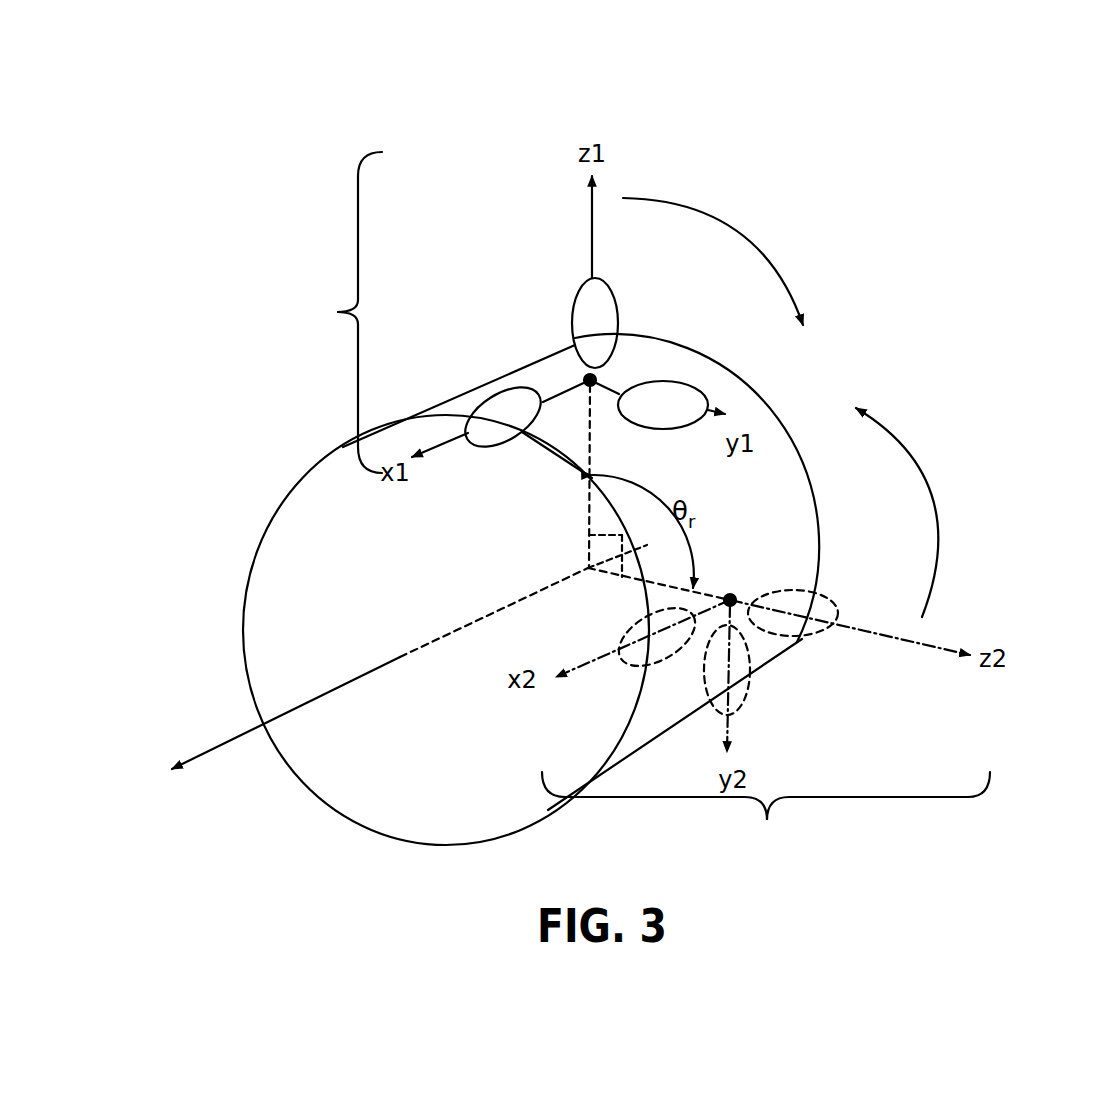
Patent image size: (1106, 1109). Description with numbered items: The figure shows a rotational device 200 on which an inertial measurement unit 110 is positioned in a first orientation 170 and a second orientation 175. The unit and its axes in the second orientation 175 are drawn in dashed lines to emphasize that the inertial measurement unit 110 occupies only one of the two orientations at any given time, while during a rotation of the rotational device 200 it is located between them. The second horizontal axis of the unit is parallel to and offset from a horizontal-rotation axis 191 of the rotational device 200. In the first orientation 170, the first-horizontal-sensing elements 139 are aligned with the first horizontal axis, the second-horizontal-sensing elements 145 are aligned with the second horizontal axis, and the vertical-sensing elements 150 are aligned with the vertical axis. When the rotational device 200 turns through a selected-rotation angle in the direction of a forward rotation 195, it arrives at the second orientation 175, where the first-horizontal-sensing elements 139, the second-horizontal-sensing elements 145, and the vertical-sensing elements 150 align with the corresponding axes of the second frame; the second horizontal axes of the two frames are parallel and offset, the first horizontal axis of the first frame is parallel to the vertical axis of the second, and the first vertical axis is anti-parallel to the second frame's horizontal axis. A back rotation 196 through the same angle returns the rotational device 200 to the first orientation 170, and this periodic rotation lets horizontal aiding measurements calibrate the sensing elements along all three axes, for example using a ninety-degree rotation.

The inertial measurement unit 110 is at (577, 438).
The first-horizontal-sensing elements 139 is at (685, 385).
The second-horizontal-sensing elements 145 is at (493, 395).
The vertical-sensing elements 150 is at (612, 313).
The first orientation 170 is at (339, 312).
The second orientation 175 is at (766, 815).
The horizontal-rotation axis 191 is at (217, 745).
The forward rotation 195 is at (737, 233).
The back rotation 196 is at (932, 532).
The rotational device 200 is at (262, 547).